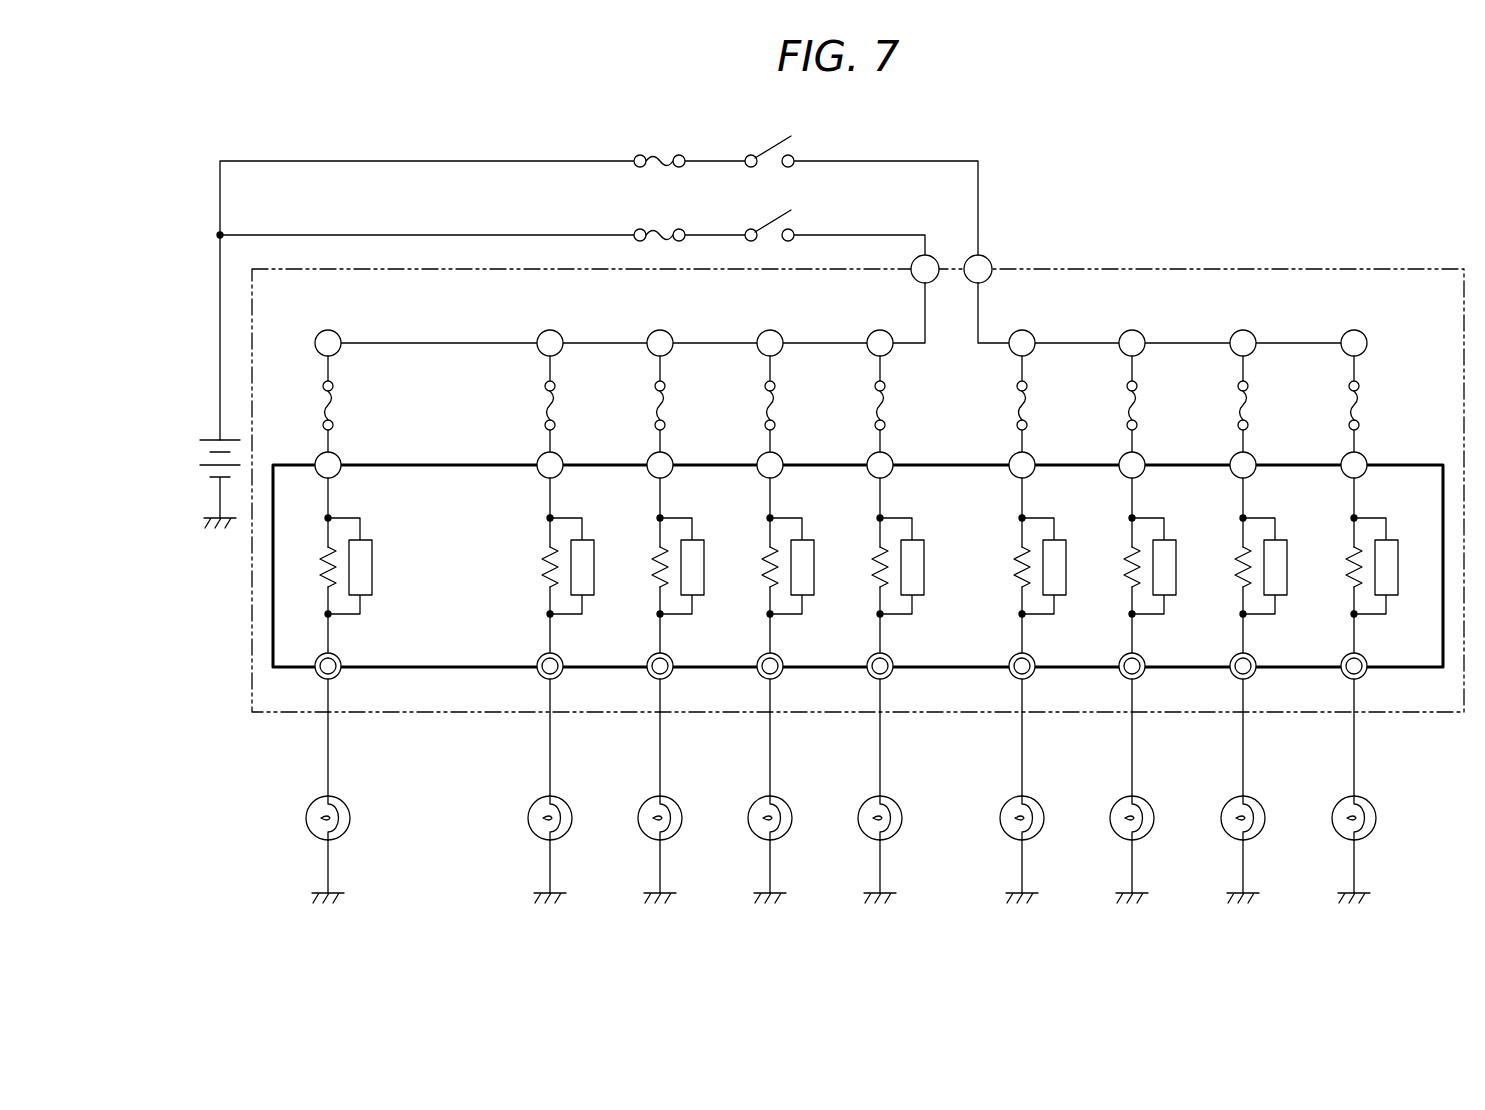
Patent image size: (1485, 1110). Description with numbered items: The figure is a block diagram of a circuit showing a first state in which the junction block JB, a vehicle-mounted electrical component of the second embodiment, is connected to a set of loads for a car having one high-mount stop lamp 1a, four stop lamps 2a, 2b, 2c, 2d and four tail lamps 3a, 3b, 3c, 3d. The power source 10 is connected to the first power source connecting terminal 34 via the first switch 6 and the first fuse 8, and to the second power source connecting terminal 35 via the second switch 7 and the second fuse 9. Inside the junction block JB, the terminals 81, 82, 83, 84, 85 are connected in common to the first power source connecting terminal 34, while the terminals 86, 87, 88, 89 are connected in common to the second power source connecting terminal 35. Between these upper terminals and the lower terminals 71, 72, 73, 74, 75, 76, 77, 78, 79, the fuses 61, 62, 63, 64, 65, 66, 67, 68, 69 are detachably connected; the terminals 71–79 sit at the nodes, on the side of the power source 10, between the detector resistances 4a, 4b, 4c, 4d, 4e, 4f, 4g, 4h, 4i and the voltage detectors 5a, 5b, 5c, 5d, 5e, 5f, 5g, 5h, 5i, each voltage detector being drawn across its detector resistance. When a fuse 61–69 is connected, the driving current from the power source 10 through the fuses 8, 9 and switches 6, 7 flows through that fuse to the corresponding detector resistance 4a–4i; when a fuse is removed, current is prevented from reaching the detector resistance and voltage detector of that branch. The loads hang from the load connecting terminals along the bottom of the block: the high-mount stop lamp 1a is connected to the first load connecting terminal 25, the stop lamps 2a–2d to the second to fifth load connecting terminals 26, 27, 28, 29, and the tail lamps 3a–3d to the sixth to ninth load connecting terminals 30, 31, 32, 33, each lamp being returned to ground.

The high-mount stop lamp 1a is at (317, 831).
The stop lamp 2a is at (539, 831).
The stop lamp 2b is at (649, 831).
The stop lamp 2c is at (759, 831).
The stop lamp 2d is at (869, 831).
The tail lamp 3a is at (1011, 831).
The tail lamp 3b is at (1121, 831).
The tail lamp 3c is at (1232, 831).
The tail lamp 3d is at (1343, 831).
The detector resistance 4a is at (313, 550).
The detector resistance 4b is at (535, 550).
The detector resistance 4c is at (645, 550).
The detector resistance 4d is at (755, 550).
The detector resistance 4e is at (865, 550).
The detector resistance 4f is at (1007, 550).
The detector resistance 4g is at (1117, 550).
The detector resistance 4h is at (1228, 550).
The detector resistance 4i is at (1339, 550).
The voltage detector 5a is at (364, 555).
The voltage detector 5b is at (586, 555).
The voltage detector 5c is at (695, 555).
The voltage detector 5d is at (806, 555).
The voltage detector 5e is at (916, 555).
The voltage detector 5f is at (1056, 555).
The voltage detector 5g is at (1168, 555).
The voltage detector 5h is at (1279, 555).
The voltage detector 5i is at (1386, 555).
The first switch 6 is at (770, 219).
The second switch 7 is at (770, 144).
The first fuse 8 is at (658, 231).
The second fuse 9 is at (658, 158).
The power source 10 is at (210, 439).
The first load connecting terminal 25 is at (312, 649).
The second load connecting terminal 26 is at (534, 649).
The third load connecting terminal 27 is at (644, 649).
The fourth load connecting terminal 28 is at (754, 649).
The fifth load connecting terminal 29 is at (864, 649).
The sixth load connecting terminal 30 is at (1006, 649).
The seventh load connecting terminal 31 is at (1116, 649).
The eighth load connecting terminal 32 is at (1227, 649).
The ninth load connecting terminal 33 is at (1338, 649).
The first power source connecting terminal 34 is at (930, 256).
The second power source connecting terminal 35 is at (985, 256).
The fuse 61 is at (352, 403).
The fuse 62 is at (574, 403).
The fuse 63 is at (684, 403).
The fuse 64 is at (794, 403).
The fuse 65 is at (904, 403).
The fuse 66 is at (1046, 403).
The fuse 67 is at (1156, 403).
The fuse 68 is at (1267, 403).
The fuse 69 is at (1378, 403).
The terminal 71 is at (312, 447).
The terminal 72 is at (534, 447).
The terminal 73 is at (644, 447).
The terminal 74 is at (754, 447).
The terminal 75 is at (864, 447).
The terminal 76 is at (1006, 447).
The terminal 77 is at (1116, 447).
The terminal 78 is at (1227, 447).
The terminal 79 is at (1338, 447).
The terminal 81 is at (319, 323).
The terminal 82 is at (541, 323).
The terminal 83 is at (651, 323).
The terminal 84 is at (761, 323).
The terminal 85 is at (871, 323).
The terminal 86 is at (1013, 323).
The terminal 87 is at (1123, 323).
The terminal 88 is at (1234, 323).
The terminal 89 is at (1345, 323).
The junction block JB is at (415, 465).